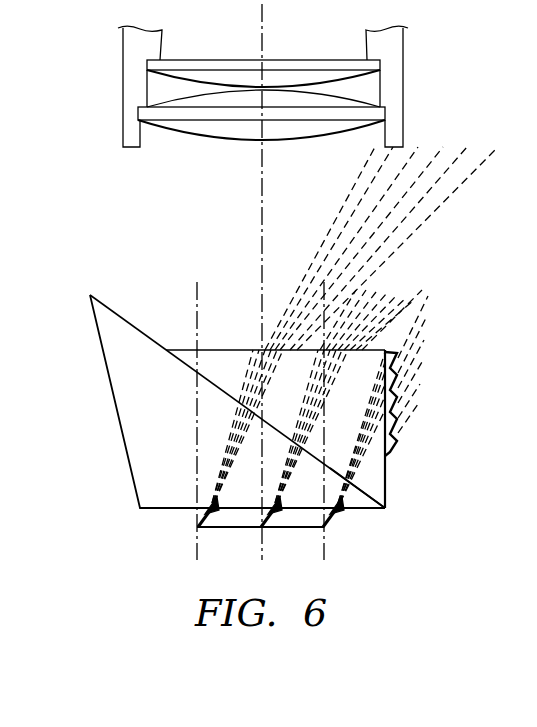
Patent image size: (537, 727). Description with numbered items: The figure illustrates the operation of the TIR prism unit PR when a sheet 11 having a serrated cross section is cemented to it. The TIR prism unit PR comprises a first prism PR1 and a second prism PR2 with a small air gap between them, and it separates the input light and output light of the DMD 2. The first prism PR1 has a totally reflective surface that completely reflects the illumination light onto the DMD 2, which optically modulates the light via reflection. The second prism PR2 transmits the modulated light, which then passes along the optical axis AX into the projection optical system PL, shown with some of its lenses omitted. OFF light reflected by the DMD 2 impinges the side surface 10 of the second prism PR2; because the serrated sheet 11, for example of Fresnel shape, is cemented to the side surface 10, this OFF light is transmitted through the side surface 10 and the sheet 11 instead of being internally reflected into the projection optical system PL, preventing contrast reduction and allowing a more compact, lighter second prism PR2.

The projection optical system PL is at (428, 89).
The optical axis AX is at (262, 232).
The TIR prism unit PR is at (239, 406).
The first prism PR1 is at (133, 440).
The second prism PR2 is at (380, 497).
The side surface 10 is at (387, 467).
The sheet 11 is at (398, 432).
The DMD 2 is at (285, 528).